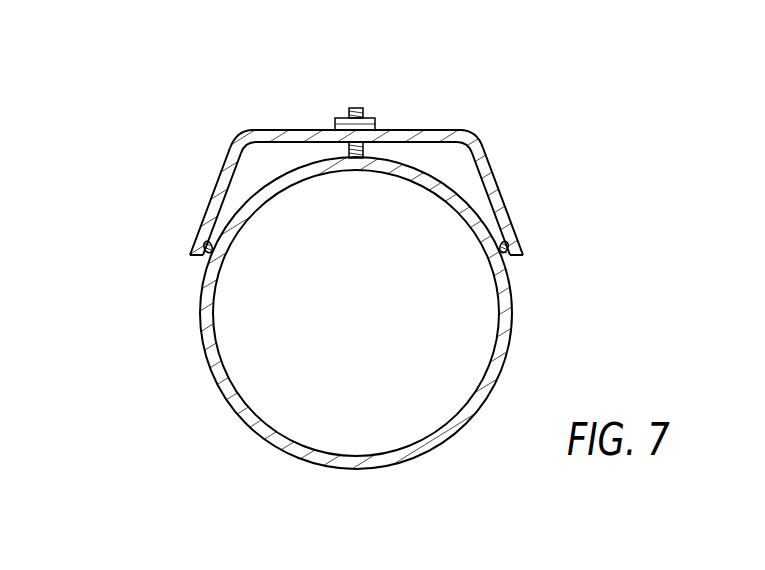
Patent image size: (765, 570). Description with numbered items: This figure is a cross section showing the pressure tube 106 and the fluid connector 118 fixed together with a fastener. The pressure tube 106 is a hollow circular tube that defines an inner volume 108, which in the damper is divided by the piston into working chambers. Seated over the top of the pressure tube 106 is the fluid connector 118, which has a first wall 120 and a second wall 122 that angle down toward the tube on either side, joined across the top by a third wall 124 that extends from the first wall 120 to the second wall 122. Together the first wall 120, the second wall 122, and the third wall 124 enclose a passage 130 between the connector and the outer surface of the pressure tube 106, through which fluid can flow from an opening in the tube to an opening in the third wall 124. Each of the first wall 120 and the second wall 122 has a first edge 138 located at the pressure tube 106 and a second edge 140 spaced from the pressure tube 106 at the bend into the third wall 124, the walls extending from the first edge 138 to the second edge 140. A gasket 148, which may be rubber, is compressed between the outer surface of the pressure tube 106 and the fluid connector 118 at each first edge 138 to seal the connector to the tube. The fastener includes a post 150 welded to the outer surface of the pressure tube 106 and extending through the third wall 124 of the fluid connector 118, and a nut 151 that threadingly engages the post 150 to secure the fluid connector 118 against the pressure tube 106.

The pressure tube 106 is at (217, 383).
The inner volume 108 is at (356, 313).
The fluid connector 118 is at (277, 130).
The first wall 120 is at (213, 190).
The second wall 122 is at (500, 195).
The third wall 124 is at (420, 128).
The passage 130 is at (443, 162).
The first edge 138 is at (191, 255).
The second edge 140 is at (242, 129).
The gasket 148 is at (208, 253).
The post 150 is at (356, 107).
The nut 151 is at (335, 125).